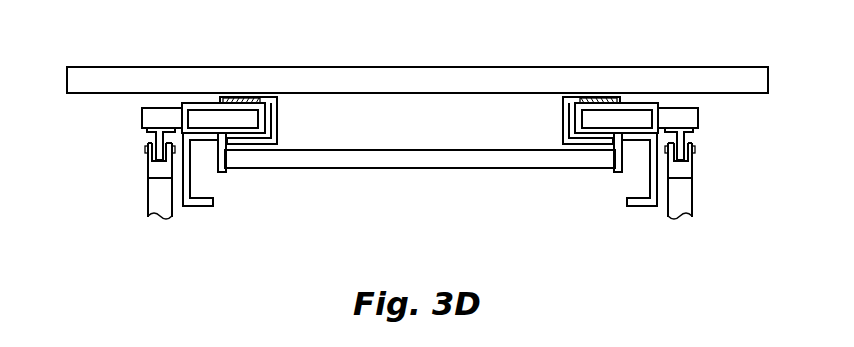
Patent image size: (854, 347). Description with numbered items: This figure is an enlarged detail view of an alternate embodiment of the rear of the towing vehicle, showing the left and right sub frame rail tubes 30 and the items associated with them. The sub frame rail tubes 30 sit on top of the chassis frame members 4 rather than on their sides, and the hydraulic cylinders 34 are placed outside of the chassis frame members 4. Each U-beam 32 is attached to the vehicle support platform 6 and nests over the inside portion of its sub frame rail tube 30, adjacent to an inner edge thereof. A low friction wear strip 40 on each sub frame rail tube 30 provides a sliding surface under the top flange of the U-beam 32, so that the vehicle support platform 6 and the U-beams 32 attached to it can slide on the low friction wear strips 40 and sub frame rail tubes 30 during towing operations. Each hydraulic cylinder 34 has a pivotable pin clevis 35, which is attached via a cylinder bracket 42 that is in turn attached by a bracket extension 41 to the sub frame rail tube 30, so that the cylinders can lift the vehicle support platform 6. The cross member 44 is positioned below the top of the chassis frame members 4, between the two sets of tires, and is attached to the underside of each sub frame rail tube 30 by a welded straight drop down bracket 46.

The vehicle support platform 6 is at (416, 80).
The chassis frame member 4 is at (203, 206).
The sub frame rail tube 30 is at (203, 107).
The U-beam 32 is at (278, 110).
The hydraulic cylinder 34 is at (140, 207).
The pivotable pin clevis 35 is at (152, 168).
The low friction wear strip 40 is at (240, 102).
The bracket extension 41 is at (158, 115).
The cylinder bracket 42 is at (147, 130).
The cross member 44 is at (423, 160).
The welded straight drop down bracket 46 is at (223, 173).